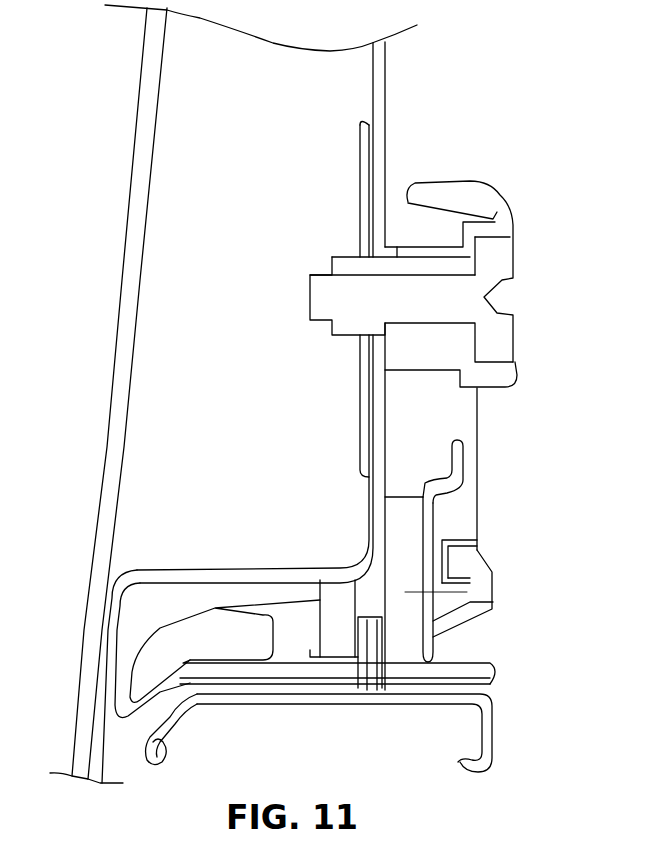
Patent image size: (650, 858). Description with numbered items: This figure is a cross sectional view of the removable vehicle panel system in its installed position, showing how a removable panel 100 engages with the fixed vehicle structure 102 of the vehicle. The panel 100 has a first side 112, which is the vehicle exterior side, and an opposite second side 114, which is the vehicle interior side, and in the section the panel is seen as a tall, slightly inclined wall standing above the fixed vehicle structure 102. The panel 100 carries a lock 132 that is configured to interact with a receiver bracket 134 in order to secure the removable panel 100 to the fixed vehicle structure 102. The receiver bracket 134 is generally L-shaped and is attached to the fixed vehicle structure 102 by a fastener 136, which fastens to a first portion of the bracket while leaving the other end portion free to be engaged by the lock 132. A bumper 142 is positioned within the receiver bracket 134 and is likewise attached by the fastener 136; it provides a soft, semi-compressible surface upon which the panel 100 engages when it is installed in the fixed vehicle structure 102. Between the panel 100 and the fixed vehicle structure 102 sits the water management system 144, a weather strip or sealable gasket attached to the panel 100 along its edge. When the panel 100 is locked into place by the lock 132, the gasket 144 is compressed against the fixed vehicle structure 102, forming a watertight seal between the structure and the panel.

The removable panel 100 is at (163, 306).
The fixed vehicle structure 102 is at (490, 670).
The first side 112 is at (110, 423).
The second side 114 is at (386, 95).
The lock 132 is at (465, 410).
The receiver bracket 134 is at (463, 508).
The fastener 136 is at (370, 690).
The bumper 142 is at (478, 601).
The water management system 144 is at (147, 650).